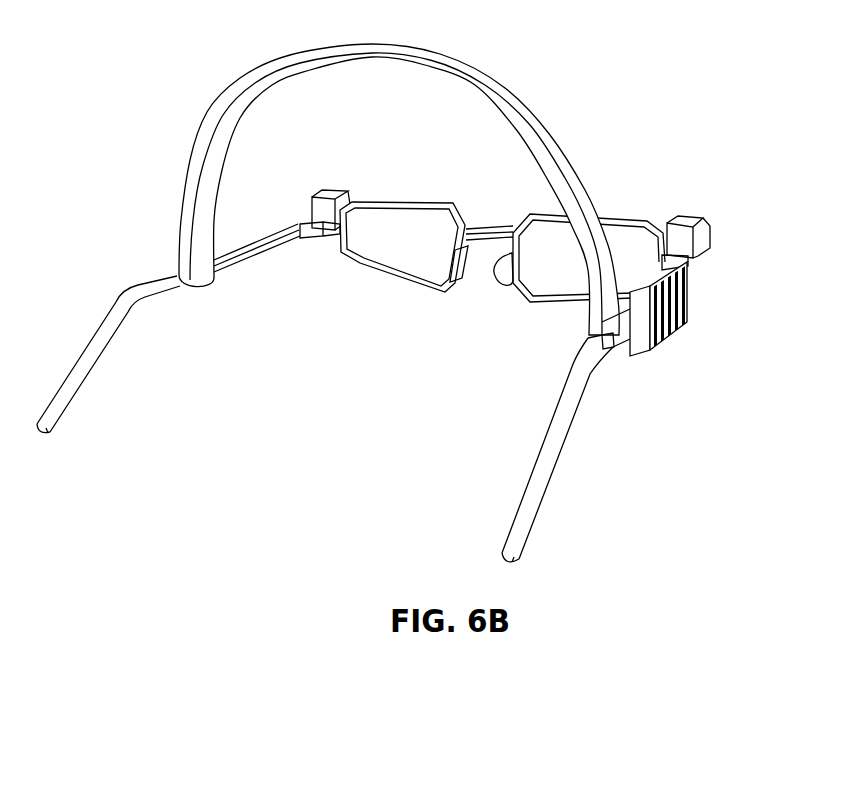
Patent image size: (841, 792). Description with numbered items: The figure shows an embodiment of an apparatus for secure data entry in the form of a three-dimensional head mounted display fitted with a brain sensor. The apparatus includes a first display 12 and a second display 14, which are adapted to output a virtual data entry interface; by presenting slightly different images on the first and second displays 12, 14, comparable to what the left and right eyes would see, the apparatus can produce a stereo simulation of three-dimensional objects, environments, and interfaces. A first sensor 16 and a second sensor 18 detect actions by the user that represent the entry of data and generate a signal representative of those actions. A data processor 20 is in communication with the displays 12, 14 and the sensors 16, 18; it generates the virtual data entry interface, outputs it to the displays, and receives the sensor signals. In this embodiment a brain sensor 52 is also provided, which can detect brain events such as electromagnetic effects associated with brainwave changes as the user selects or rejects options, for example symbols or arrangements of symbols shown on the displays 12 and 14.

The first display 12 is at (400, 235).
The second display 14 is at (568, 252).
The first sensor 16 is at (332, 192).
The second sensor 18 is at (688, 217).
The data processor 20 is at (665, 338).
The brain sensor 52 is at (292, 78).